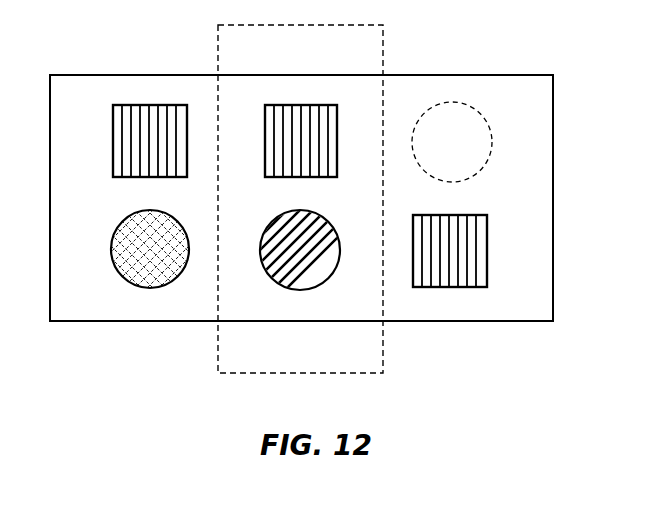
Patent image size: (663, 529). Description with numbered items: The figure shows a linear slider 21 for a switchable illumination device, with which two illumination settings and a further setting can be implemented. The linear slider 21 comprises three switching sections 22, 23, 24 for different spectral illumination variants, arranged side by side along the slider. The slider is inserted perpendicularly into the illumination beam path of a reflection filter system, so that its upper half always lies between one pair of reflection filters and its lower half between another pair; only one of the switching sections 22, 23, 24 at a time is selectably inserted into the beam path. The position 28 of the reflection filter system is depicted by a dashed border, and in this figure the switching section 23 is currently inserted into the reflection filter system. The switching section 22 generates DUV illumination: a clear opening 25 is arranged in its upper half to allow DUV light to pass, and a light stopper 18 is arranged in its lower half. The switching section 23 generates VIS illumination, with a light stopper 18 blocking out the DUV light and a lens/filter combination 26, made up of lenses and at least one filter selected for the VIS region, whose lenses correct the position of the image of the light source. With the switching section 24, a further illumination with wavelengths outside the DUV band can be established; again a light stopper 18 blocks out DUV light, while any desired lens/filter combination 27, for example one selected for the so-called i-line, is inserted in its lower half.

The light stopper 18 is at (117, 127).
The linear slider 21 is at (518, 73).
The switching section 22 is at (443, 82).
The switching section 23 is at (287, 82).
The switching section 24 is at (98, 82).
The clear opening 25 is at (483, 143).
The lens/filter combination 26 is at (298, 285).
The lens/filter combination 27 is at (115, 248).
The position of the reflection filter system 28 is at (385, 360).